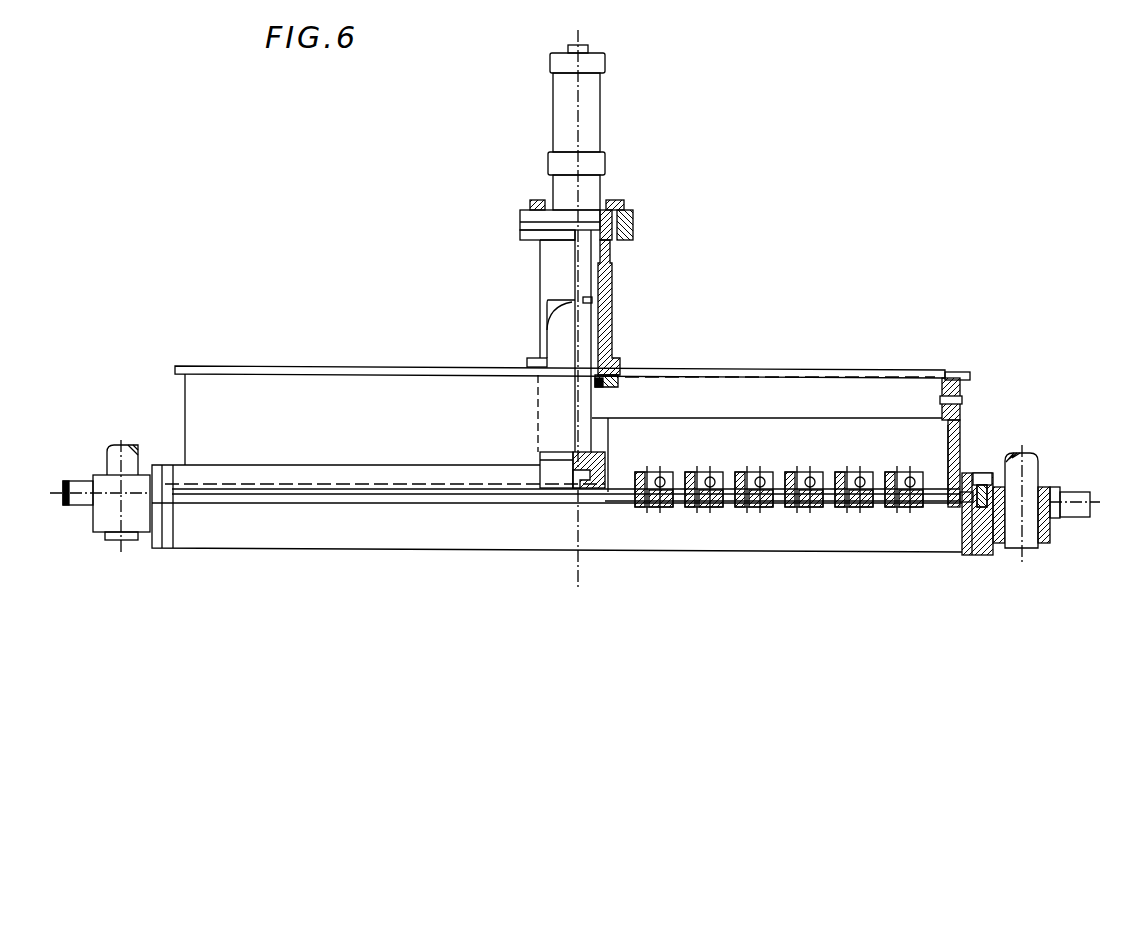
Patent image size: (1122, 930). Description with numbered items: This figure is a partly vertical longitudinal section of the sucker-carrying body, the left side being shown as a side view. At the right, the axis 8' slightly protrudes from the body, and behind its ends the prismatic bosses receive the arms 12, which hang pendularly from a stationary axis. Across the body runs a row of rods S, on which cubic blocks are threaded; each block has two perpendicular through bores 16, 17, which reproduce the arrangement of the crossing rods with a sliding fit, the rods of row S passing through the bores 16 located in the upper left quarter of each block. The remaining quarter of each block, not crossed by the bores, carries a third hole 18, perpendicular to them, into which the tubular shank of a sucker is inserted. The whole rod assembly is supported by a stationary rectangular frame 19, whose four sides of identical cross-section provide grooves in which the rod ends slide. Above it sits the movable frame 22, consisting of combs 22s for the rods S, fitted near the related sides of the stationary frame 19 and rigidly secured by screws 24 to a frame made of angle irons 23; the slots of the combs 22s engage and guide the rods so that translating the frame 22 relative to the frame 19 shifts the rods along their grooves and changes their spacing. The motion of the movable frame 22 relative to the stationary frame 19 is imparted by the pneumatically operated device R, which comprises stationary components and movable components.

The pneumatically operated device R is at (614, 348).
The frame made of angle irons 23 is at (891, 388).
The movable frame 22 is at (972, 374).
The screws 24 is at (962, 400).
The combs 22s is at (948, 437).
The rectangular frame 19 is at (985, 471).
The third hole 18 is at (888, 472).
The bore 17 is at (913, 489).
The bore 16 is at (922, 508).
The rods of row s S is at (569, 507).
The arms 12 is at (1022, 560).
The axis 8' is at (1075, 545).